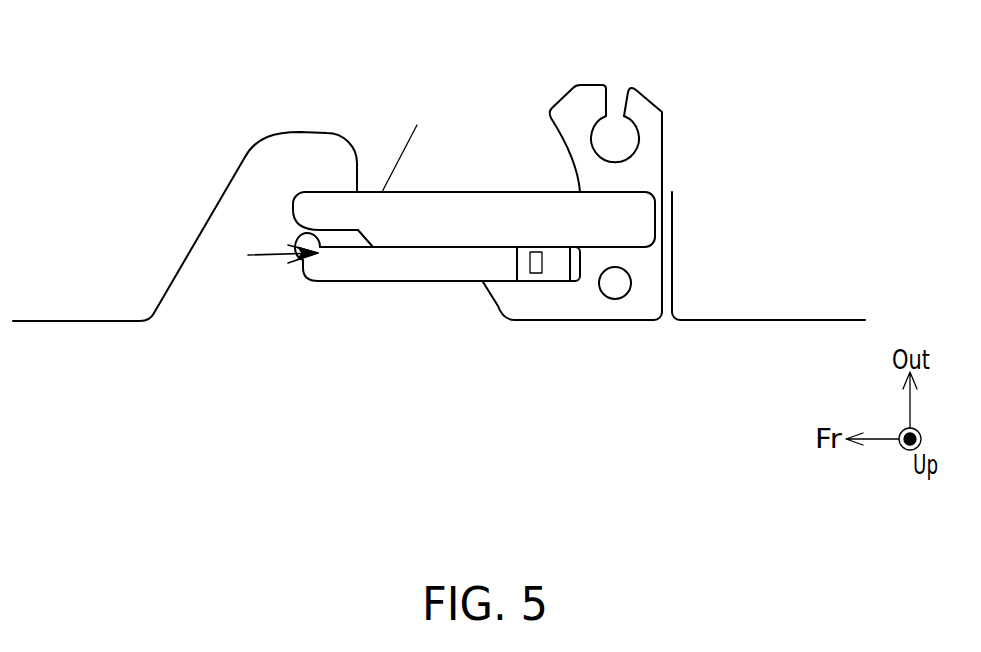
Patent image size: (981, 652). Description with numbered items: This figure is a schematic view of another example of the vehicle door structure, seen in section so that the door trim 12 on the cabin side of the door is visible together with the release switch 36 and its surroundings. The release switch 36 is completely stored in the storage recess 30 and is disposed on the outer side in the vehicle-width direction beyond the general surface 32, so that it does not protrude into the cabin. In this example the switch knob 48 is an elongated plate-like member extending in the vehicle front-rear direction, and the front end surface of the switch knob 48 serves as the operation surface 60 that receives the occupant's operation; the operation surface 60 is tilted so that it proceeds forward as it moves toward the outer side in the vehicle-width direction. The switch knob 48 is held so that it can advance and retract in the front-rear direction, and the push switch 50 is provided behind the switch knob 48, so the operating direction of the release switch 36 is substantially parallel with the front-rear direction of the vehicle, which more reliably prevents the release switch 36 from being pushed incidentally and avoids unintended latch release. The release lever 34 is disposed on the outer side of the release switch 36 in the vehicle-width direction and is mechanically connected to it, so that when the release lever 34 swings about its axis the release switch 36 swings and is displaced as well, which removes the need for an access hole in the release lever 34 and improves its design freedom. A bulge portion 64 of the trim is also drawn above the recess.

The door trim 12 is at (93, 312).
The storage recess 30 is at (442, 251).
The general surface 32 is at (783, 322).
The release lever 34 is at (467, 222).
The release switch 36 is at (373, 272).
The switch knob 48 is at (441, 308).
The push switch 50 is at (558, 272).
The operation surface 60 is at (307, 275).
The cover bulge portion 64 is at (323, 192).